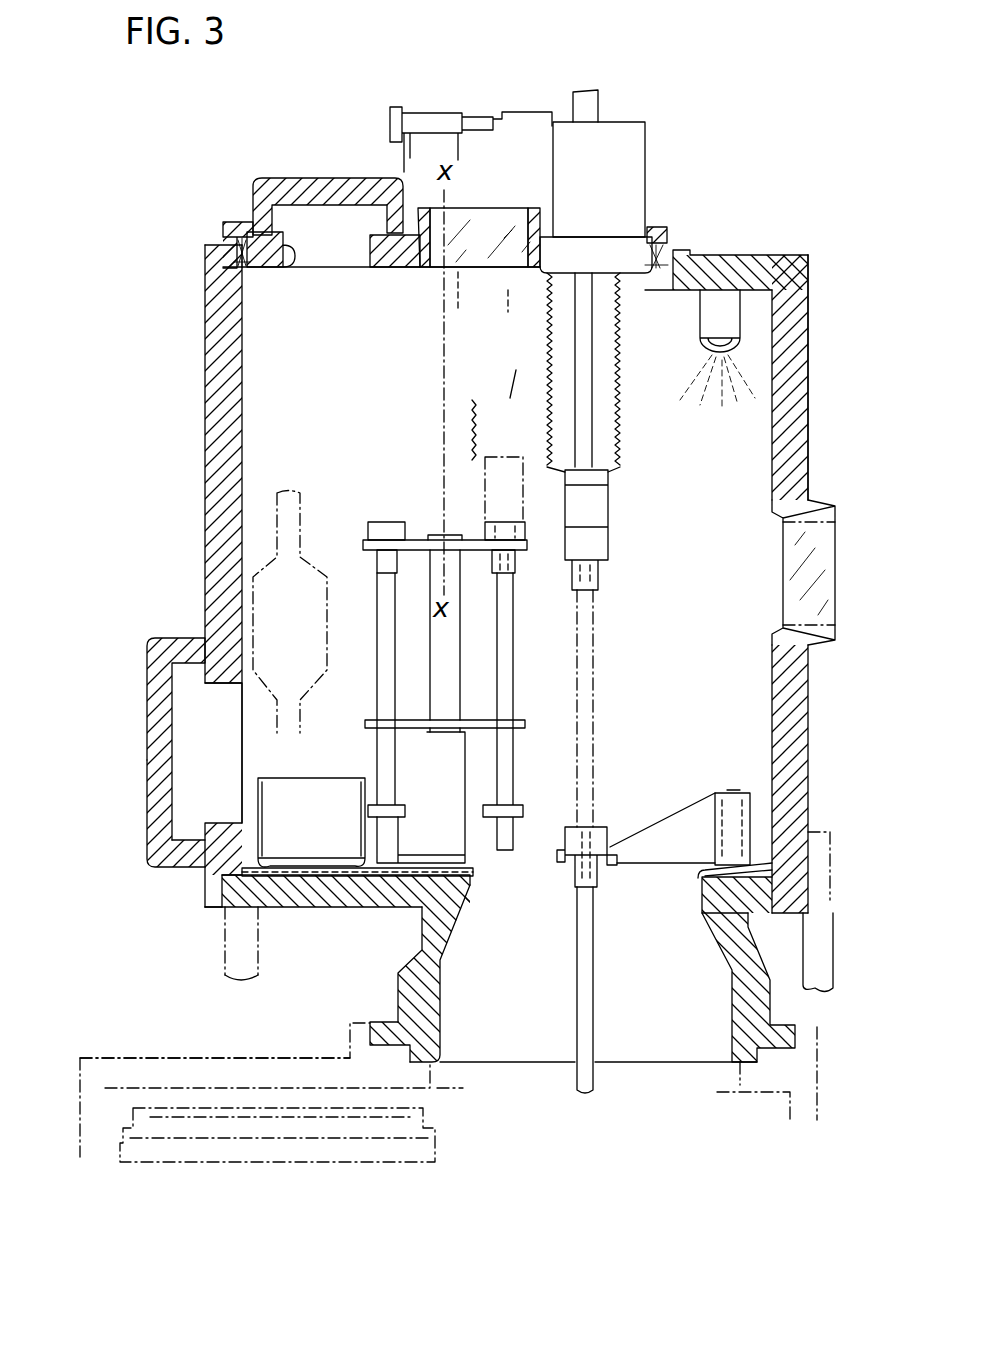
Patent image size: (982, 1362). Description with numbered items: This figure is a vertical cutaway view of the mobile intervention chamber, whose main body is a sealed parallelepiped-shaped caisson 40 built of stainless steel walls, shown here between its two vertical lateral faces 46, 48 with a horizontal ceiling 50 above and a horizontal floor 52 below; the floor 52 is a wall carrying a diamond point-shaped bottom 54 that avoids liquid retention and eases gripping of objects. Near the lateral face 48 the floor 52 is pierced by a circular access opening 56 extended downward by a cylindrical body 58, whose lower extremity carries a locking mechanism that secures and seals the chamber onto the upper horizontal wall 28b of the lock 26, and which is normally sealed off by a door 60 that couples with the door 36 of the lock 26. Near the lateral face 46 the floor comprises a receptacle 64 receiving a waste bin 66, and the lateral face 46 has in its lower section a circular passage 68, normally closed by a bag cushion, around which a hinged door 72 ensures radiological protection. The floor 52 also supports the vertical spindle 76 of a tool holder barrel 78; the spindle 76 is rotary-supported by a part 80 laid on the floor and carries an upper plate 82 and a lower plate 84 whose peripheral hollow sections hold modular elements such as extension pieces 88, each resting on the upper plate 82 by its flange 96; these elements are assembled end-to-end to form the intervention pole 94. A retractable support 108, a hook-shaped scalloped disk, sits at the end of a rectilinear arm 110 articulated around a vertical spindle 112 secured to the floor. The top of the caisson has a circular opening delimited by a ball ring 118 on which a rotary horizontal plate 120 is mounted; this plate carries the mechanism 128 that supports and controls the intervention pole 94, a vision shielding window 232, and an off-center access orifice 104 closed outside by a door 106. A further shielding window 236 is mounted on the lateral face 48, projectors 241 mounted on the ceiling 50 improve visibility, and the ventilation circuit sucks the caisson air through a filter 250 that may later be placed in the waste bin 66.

The lock 26 is at (82, 1050).
The upper horizontal wall 28b is at (312, 1062).
The door 36 is at (320, 1140).
The sealed caisson 40 is at (825, 352).
The lateral face 46 is at (226, 402).
The lateral face 48 is at (790, 420).
The ceiling 50 is at (745, 263).
The floor 52 is at (330, 908).
The diamond point-shaped bottom 54 is at (302, 908).
The access opening 56 is at (465, 905).
The cylindrical body 58 is at (440, 1038).
The door 60 is at (182, 1132).
The receptacle 64 is at (363, 878).
The waste bin 66 is at (258, 802).
The circular passage 68 is at (232, 690).
The door 72 is at (162, 852).
The vertical spindle 76 is at (485, 652).
The tool holder barrel 78 is at (440, 535).
The part 80 is at (455, 835).
The upper plate 82 is at (365, 545).
The lower plate 84 is at (368, 727).
The extension piece 88 is at (500, 688).
The intervention pole 94 is at (603, 974).
The flange 96 is at (382, 522).
The access orifice 104 is at (290, 268).
The door 106 is at (345, 185).
The retractable support 108 is at (562, 863).
The rectilinear arm 110 is at (680, 822).
The vertical spindle 112 is at (733, 792).
The ball ring 118 is at (212, 258).
The rotary horizontal plate 120 is at (397, 268).
The mechanism for supporting and controlling the intervention pole 128 is at (672, 212).
The vision shielding window 232 is at (488, 215).
The shielding window 236 is at (790, 585).
The projector 241 is at (718, 355).
The filter 250 is at (262, 560).